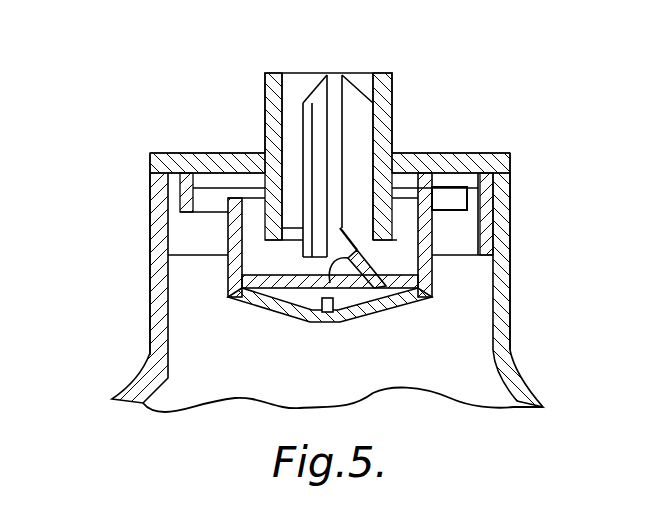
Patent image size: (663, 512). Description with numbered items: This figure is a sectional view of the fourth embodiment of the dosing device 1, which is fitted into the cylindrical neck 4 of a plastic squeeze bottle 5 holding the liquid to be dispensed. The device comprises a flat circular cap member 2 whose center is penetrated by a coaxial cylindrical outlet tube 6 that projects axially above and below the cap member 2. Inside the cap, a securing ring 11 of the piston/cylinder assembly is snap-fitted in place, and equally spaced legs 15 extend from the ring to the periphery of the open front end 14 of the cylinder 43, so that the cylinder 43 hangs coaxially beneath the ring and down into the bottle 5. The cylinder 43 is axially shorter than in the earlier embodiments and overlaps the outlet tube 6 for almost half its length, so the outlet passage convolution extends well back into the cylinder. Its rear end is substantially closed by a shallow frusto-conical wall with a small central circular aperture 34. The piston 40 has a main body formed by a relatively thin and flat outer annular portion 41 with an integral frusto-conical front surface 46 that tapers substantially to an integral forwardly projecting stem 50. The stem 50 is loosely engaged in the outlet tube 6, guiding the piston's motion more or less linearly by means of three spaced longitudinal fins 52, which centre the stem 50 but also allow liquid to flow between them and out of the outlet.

The dosing device 1 is at (440, 140).
The cap member 2 is at (188, 152).
The neck 4 is at (157, 290).
The squeeze bottle 5 is at (517, 385).
The outlet tube 6 is at (268, 122).
The securing ring 11 is at (183, 191).
The open front end 14 is at (252, 198).
The legs 15 is at (423, 193).
The central circular aperture 34 is at (320, 314).
The piston 40 is at (353, 273).
The outer annular portion 41 is at (403, 285).
The cylinder 43 is at (228, 268).
The frusto-conical front surface 46 is at (270, 262).
The stem 50 is at (335, 68).
The longitudinal fins 52 is at (303, 107).